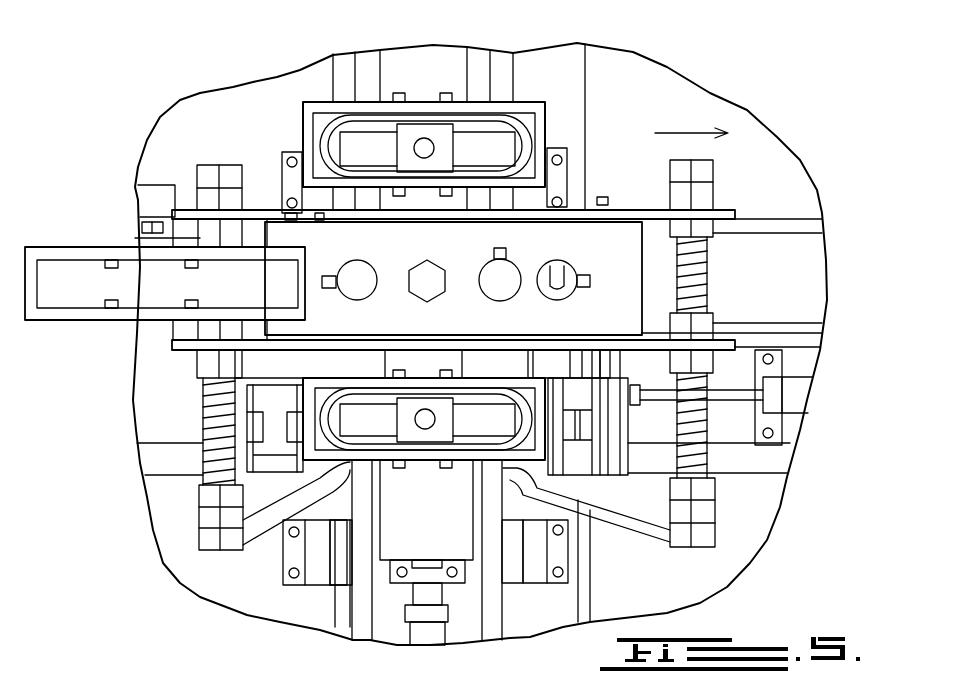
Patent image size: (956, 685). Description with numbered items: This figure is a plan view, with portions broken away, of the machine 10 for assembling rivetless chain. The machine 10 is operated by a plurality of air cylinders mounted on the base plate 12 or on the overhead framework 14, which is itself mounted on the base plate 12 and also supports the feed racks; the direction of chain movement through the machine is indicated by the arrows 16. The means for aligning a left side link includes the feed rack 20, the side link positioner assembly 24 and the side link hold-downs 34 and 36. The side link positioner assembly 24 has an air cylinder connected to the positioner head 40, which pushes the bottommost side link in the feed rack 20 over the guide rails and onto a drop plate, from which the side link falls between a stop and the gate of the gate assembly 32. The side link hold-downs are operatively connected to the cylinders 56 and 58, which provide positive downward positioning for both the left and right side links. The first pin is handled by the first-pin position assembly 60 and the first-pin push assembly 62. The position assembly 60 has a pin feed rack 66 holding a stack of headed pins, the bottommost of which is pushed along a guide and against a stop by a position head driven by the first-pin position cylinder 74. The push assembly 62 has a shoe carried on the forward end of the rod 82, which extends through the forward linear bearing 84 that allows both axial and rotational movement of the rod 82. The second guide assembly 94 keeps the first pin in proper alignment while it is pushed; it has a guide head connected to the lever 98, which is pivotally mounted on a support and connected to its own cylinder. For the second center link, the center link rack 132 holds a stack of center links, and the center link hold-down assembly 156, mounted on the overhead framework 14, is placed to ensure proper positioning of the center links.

The machine 10 is at (88, 424).
The base plate 12 is at (640, 102).
The overhead framework 14 is at (654, 297).
The arrows 16 is at (685, 133).
The feed rack 20 is at (522, 105).
The side link positioner assembly 24 is at (442, 62).
The gate assembly 32 is at (578, 274).
The side link hold-down 34 is at (519, 273).
The side link hold-down 36 is at (364, 254).
The positioner head 40 is at (390, 62).
The cylinder 56 is at (493, 290).
The cylinder 58 is at (365, 290).
The pin 1 position assembly 60 is at (814, 409).
The pin 1 push assembly 62 is at (546, 578).
The pin feed rack 66 is at (615, 488).
The pin 1 position cylinder 74 is at (798, 382).
The rod 82 is at (508, 625).
The forward linear bearing 84 is at (520, 557).
The second guide assembly 94 is at (494, 652).
The lever 98 is at (487, 618).
The center link rack 132 is at (62, 240).
The center link hold-down assembly 156 is at (436, 271).